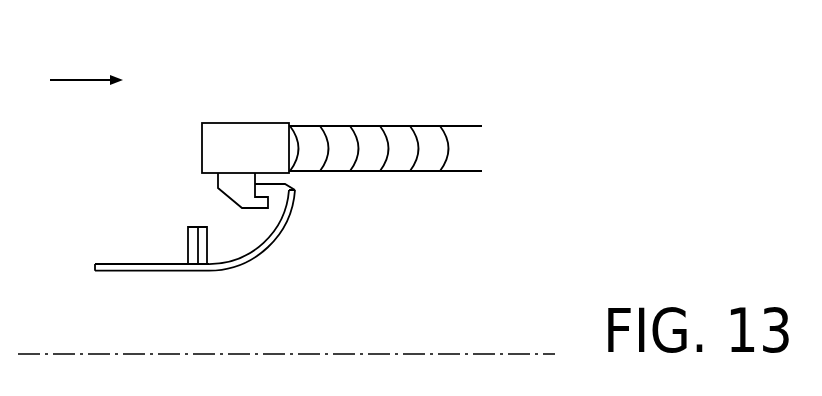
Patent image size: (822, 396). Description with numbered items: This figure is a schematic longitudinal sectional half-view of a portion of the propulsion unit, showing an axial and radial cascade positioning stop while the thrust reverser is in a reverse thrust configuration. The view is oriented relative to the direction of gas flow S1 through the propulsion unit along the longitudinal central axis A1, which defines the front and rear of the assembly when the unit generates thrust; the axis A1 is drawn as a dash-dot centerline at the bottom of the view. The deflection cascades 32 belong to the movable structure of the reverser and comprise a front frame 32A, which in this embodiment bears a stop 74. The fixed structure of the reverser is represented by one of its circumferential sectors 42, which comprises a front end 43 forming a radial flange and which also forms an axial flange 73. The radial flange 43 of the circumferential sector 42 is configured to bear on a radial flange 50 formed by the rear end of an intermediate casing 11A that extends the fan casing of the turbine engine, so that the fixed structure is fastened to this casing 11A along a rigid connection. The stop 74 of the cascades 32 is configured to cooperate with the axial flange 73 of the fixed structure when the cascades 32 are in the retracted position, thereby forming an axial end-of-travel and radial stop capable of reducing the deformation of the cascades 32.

The direction of gas flow S1 is at (82, 78).
The front frame of the cascades 32A is at (238, 128).
The deflection cascades 32 is at (421, 131).
The stop 74 is at (220, 196).
The axial flange 73 is at (298, 187).
The circumferential sector 42 is at (265, 248).
The intermediate casing 11A is at (128, 272).
The front end forming a radial flange 43 is at (203, 226).
The radial flange 50 is at (186, 243).
The longitudinal central axis A1 is at (513, 354).